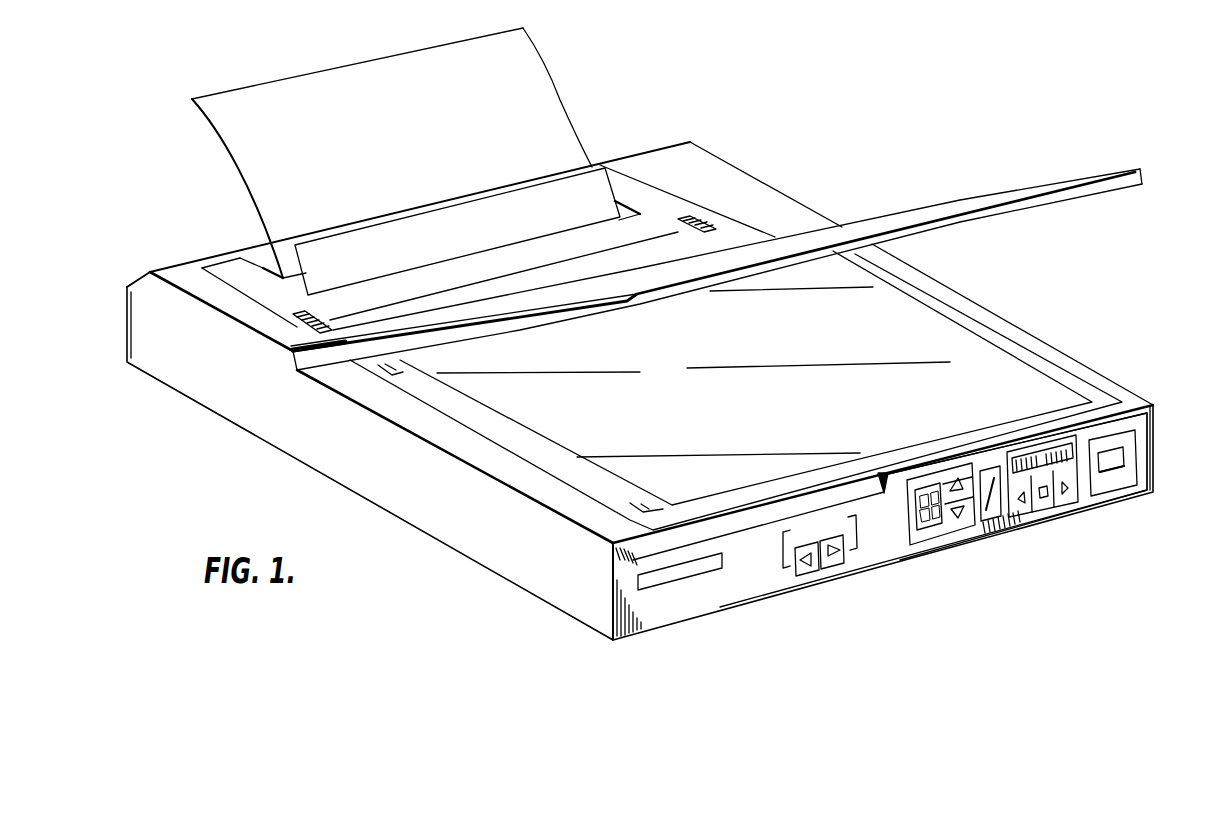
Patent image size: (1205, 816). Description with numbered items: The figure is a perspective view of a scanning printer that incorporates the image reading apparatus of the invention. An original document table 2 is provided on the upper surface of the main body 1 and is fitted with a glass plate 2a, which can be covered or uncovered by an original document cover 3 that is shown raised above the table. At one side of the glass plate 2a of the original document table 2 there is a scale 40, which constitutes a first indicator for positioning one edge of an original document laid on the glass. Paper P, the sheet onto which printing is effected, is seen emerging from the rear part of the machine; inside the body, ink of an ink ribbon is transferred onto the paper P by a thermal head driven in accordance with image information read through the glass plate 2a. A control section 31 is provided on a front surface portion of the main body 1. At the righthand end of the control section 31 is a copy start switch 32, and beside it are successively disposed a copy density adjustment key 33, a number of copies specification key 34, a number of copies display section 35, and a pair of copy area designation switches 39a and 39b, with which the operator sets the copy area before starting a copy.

The paper P is at (543, 82).
The main body 1 is at (793, 217).
The original document table 2 is at (980, 312).
The glass plate 2a is at (1013, 378).
The original document cover 3 is at (1032, 190).
The control section 31 is at (883, 545).
The copy start switch 32 is at (1122, 453).
The copy density adjustment key 33 is at (1063, 497).
The number of copies specification key 34 is at (967, 520).
The number of copies display section 35 is at (933, 530).
The copy area designation switch 39a is at (832, 565).
The copy area designation switch 39b is at (800, 572).
The scale 40 is at (575, 476).